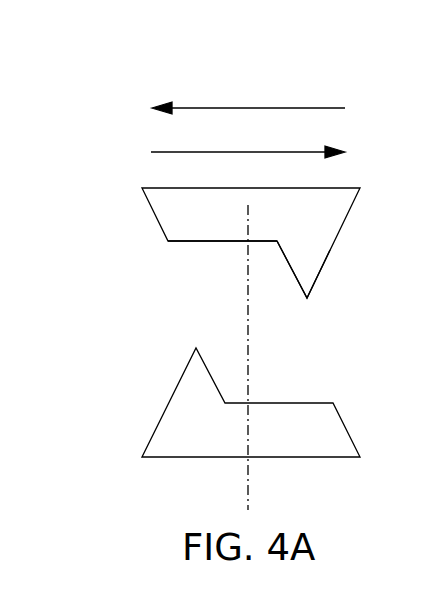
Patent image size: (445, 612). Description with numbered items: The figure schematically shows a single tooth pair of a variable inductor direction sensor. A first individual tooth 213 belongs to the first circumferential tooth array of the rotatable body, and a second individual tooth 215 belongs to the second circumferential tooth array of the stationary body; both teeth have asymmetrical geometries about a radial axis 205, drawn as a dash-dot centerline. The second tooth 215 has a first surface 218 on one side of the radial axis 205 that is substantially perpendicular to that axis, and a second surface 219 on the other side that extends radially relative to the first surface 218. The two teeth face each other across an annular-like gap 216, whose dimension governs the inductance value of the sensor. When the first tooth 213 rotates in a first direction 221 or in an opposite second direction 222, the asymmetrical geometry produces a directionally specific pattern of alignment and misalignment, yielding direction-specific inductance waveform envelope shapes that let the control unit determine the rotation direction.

The first direction 221 is at (276, 108).
The second direction 222 is at (152, 152).
The second individual tooth 215 is at (124, 228).
The first surface 218 is at (203, 241).
The second surface 219 is at (307, 298).
The radial axis 205 is at (248, 341).
The annular-like gap 216 is at (203, 335).
The first individual tooth 213 is at (128, 409).